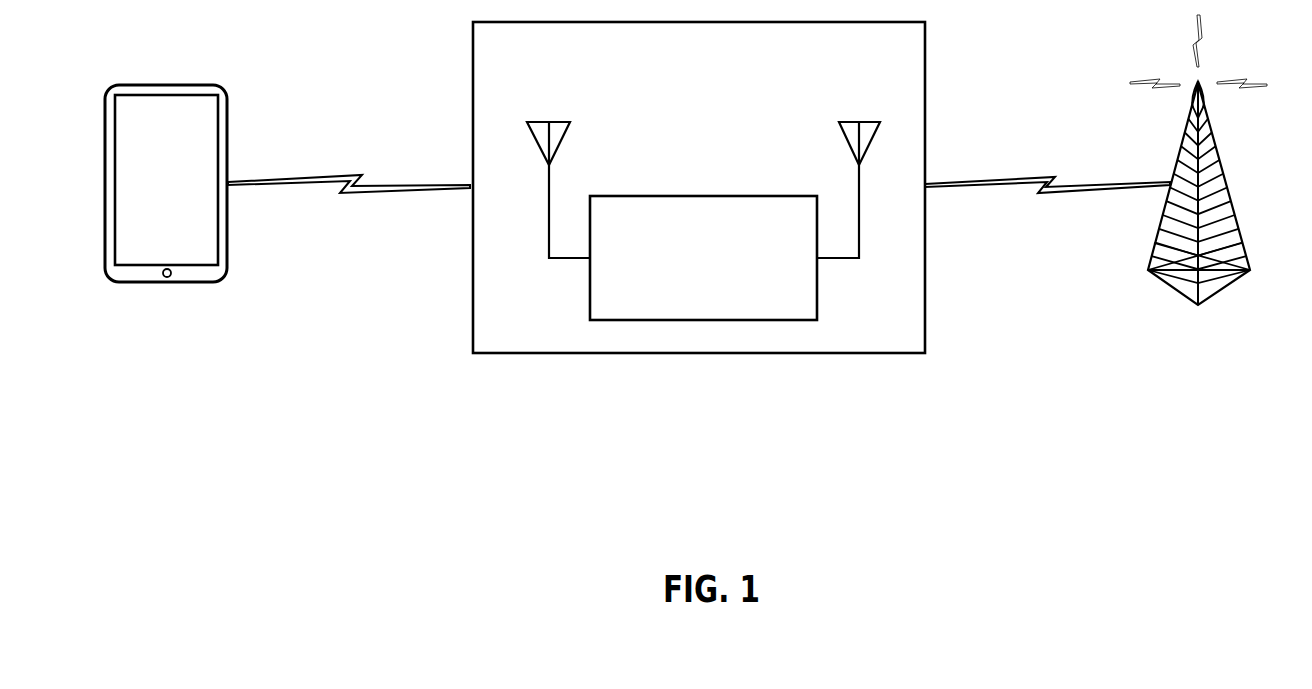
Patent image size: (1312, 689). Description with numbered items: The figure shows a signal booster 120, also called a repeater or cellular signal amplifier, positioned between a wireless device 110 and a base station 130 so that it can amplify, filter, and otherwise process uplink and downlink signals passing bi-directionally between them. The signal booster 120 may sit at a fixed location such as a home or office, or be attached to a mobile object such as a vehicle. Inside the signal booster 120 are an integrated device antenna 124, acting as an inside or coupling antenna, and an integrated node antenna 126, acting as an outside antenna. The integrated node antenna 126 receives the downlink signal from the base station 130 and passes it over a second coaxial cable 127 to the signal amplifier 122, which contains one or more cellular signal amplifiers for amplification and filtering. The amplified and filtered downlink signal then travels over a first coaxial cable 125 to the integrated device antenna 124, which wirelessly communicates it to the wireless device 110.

The wireless device 110 is at (158, 85).
The signal booster 120 is at (817, 60).
The signal amplifier 122 is at (723, 283).
The integrated device antenna 124 is at (548, 131).
The first coaxial cable 125 is at (540, 211).
The integrated node antenna 126 is at (859, 131).
The second coaxial cable 127 is at (862, 211).
The base station 130 is at (1216, 143).